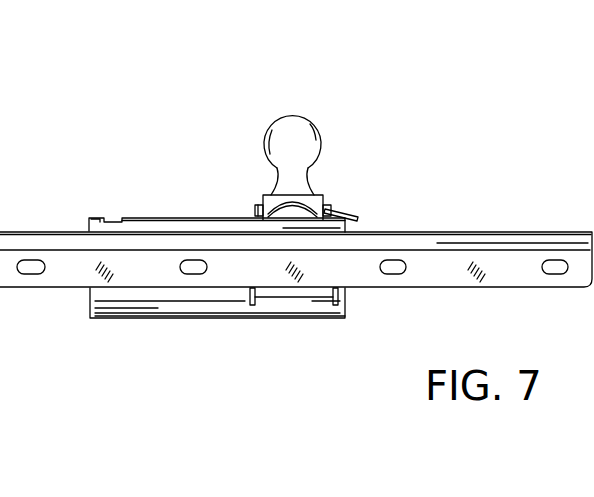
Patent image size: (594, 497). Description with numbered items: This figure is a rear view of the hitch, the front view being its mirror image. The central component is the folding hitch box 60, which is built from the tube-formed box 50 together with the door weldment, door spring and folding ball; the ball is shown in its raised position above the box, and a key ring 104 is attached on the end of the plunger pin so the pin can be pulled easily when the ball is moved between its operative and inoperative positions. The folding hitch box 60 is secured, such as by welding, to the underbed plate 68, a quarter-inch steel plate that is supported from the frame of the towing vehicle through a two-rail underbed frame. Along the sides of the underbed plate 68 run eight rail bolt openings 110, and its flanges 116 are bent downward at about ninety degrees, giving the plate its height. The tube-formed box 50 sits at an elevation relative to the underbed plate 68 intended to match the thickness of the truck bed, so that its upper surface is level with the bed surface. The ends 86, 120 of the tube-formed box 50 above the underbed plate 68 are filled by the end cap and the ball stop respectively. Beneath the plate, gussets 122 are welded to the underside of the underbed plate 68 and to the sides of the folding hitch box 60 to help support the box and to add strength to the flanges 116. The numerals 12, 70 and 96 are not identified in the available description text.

The vehicle frame rail 12 is at (297, 292).
The tube-formed box 50 is at (145, 207).
The folding hitch box 60 is at (209, 185).
The underbed plate 68 is at (475, 231).
The hitch system 70 is at (424, 100).
The end of the tube-formed box 86 is at (88, 313).
The hitch ball 96 is at (270, 125).
The key ring 104 is at (356, 218).
The rail bolt openings 110 is at (40, 275).
The flanges 116 is at (382, 283).
The end of the tube-formed box 120 is at (348, 310).
The gussets 122 is at (333, 300).